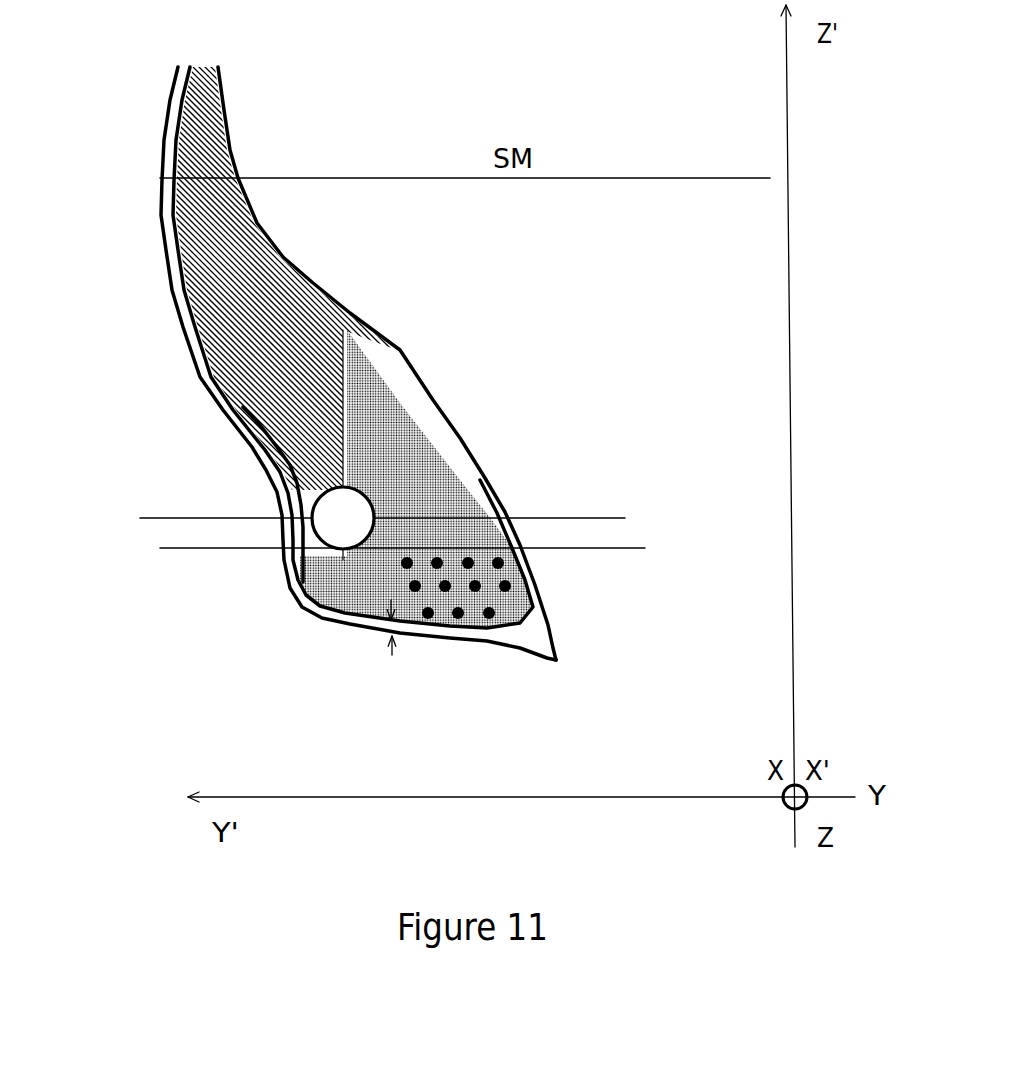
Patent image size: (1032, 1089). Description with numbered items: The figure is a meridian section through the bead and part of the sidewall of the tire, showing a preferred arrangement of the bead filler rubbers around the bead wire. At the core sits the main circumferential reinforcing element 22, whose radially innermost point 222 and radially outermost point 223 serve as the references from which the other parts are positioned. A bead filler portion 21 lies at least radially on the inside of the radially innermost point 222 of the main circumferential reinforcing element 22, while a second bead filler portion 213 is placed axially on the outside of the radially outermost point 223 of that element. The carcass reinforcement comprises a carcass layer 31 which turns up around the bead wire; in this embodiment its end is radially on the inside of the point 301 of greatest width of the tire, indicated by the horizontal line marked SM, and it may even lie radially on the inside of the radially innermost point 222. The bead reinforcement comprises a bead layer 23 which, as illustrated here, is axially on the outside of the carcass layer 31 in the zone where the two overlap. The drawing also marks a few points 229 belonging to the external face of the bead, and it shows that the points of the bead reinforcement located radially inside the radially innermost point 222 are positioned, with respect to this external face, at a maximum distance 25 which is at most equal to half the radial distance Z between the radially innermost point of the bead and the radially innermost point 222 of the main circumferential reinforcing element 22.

The carcass layer 31 is at (186, 150).
The point of greatest width of the tire 301 is at (161, 178).
The bead filler portion 213 is at (247, 305).
The main circumferential reinforcing element 22 is at (366, 493).
The bead filler portion 21 is at (417, 577).
The radially outermost point of the main circumferential reinforcing element 223 is at (283, 463).
The radially innermost point of the main circumferential reinforcing element 222 is at (345, 556).
The points belonging to the external face of the bead 229 is at (559, 598).
The maximum distance 25 is at (394, 634).
The bead layer 23 is at (450, 633).